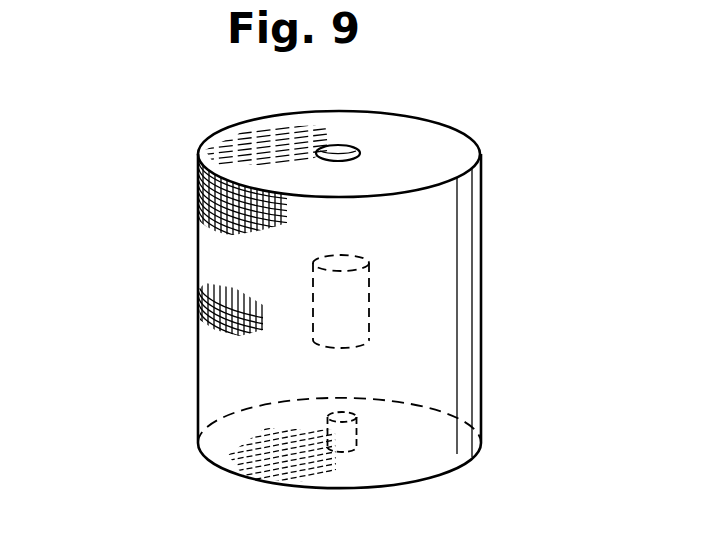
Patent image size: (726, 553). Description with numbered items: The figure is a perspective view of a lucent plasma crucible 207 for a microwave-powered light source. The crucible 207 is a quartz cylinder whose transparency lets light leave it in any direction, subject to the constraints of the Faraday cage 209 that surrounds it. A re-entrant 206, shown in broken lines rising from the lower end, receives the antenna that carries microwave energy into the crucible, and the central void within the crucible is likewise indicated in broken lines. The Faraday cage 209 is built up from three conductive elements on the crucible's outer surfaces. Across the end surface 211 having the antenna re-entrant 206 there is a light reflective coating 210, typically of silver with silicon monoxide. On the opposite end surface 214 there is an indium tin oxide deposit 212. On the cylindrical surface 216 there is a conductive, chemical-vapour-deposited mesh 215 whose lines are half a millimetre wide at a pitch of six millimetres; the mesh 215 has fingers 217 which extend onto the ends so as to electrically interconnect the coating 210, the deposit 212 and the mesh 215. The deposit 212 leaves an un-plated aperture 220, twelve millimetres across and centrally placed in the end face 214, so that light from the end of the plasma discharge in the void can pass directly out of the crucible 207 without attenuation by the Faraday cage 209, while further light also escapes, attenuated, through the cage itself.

The re-entrant 206 is at (357, 433).
The lucent plasma crucible 207 is at (420, 328).
The Faraday cage 209 is at (222, 315).
The light reflective coating 210 is at (287, 455).
The end surface 211 is at (428, 418).
The indium tin oxide deposit 212 is at (257, 143).
The end surface 214 is at (423, 148).
The conductive chemical-vapour-deposited mesh 215 is at (230, 200).
The cylindrical surface 216 is at (430, 233).
The fingers 217 is at (203, 158).
The aperture 220 is at (343, 150).